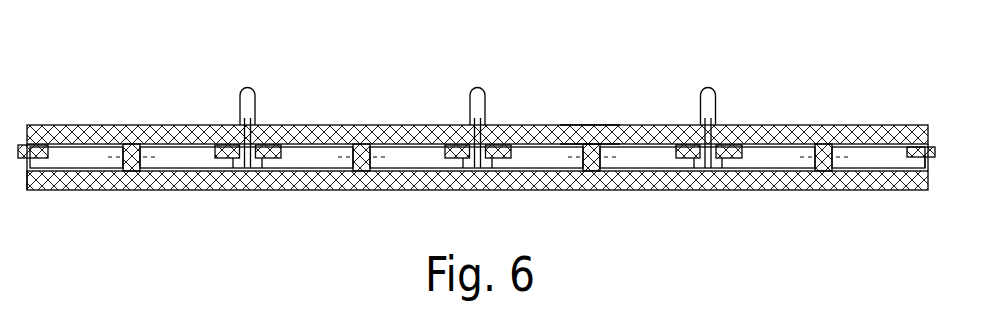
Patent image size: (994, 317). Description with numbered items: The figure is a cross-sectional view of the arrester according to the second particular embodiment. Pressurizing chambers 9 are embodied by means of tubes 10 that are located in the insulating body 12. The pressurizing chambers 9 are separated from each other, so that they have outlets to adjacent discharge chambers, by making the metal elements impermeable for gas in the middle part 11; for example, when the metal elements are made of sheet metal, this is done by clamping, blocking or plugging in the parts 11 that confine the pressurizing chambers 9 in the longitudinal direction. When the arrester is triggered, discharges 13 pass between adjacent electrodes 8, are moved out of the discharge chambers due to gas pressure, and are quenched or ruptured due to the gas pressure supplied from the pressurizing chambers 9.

The electrodes 8 is at (237, 190).
The pressurizing chambers 9 is at (562, 188).
The tubes 10 is at (352, 125).
The middle part 11 is at (597, 125).
The insulating body 12 is at (45, 188).
The discharges 13 is at (246, 88).